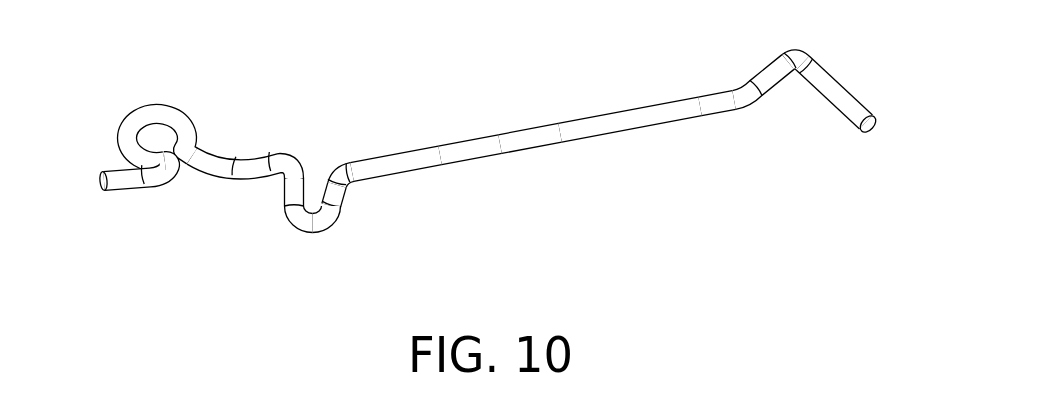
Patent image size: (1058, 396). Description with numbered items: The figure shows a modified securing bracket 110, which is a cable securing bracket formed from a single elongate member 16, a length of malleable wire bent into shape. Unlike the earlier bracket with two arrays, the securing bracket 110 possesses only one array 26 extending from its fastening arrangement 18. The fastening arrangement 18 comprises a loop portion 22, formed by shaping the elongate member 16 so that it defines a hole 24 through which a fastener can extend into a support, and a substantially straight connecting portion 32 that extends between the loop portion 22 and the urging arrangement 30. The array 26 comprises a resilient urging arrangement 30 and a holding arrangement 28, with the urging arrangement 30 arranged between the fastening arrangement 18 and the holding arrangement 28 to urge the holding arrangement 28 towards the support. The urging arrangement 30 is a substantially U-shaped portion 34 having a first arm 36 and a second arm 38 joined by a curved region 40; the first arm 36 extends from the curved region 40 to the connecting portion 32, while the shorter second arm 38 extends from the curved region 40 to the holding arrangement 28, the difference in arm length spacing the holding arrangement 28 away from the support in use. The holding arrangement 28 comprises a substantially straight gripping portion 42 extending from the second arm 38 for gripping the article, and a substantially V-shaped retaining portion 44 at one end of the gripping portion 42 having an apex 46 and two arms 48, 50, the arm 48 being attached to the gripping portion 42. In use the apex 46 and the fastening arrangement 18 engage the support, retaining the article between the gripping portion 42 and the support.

The elongate member 16 is at (714, 128).
The fastening arrangement 18 is at (108, 127).
The loop portion 22 is at (178, 110).
The hole 24 is at (146, 186).
The array 26 is at (436, 135).
The holding arrangement 28 is at (469, 178).
The urging arrangement 30 is at (293, 240).
The connecting portion 32 is at (256, 153).
The U-shaped portion 34 is at (311, 236).
The first arm 36 is at (283, 196).
The second arm 38 is at (340, 207).
The curved region 40 is at (312, 208).
The gripping portion 42 is at (577, 120).
The retaining portion 44 is at (870, 148).
The apex 46 is at (796, 58).
The arm 48 is at (760, 73).
The arm 50 is at (853, 98).
The securing bracket 110 is at (633, 168).